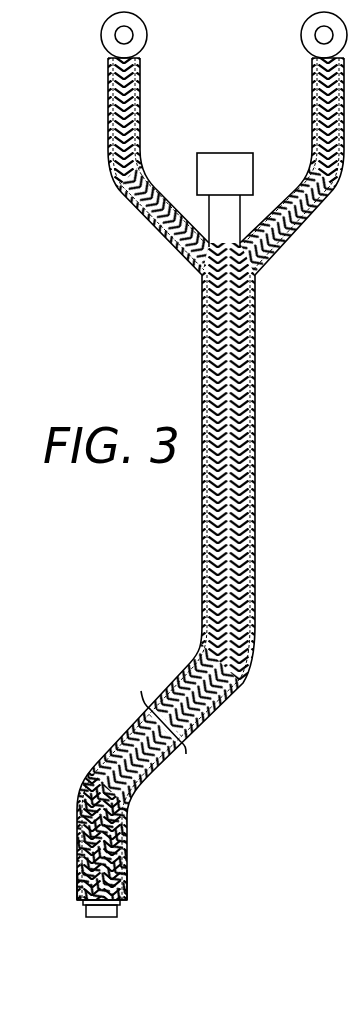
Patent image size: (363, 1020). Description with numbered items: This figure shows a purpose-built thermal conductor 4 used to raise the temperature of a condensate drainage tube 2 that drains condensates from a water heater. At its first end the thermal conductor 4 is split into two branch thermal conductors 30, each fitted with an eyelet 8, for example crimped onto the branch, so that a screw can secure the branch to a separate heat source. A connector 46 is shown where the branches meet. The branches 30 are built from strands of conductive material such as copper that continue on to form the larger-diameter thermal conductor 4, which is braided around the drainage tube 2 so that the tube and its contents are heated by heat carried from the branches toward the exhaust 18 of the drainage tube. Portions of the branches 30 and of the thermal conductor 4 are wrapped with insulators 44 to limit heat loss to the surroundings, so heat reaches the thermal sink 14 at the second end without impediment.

The eyelet 8 is at (147, 33).
The connector 46 is at (225, 153).
The drainage tube 2 is at (205, 213).
The branch thermal conductor 30 is at (148, 230).
The insulator 44 is at (183, 268).
The thermal conductor 4 is at (255, 490).
The thermal sink 14 is at (125, 876).
The exhaust of drainage tube 18 is at (83, 905).